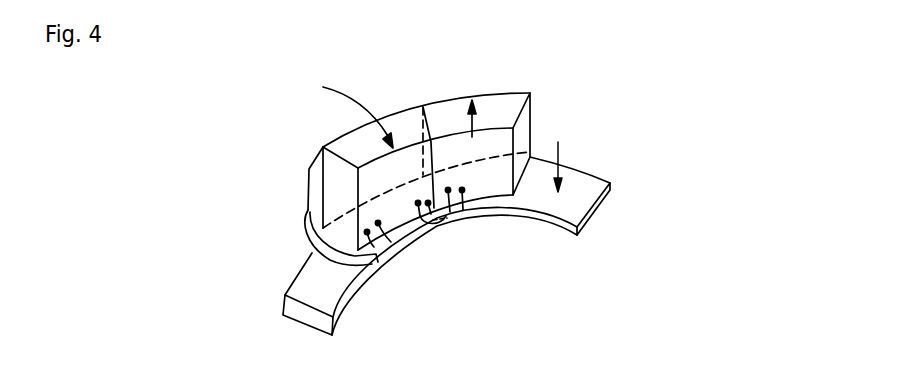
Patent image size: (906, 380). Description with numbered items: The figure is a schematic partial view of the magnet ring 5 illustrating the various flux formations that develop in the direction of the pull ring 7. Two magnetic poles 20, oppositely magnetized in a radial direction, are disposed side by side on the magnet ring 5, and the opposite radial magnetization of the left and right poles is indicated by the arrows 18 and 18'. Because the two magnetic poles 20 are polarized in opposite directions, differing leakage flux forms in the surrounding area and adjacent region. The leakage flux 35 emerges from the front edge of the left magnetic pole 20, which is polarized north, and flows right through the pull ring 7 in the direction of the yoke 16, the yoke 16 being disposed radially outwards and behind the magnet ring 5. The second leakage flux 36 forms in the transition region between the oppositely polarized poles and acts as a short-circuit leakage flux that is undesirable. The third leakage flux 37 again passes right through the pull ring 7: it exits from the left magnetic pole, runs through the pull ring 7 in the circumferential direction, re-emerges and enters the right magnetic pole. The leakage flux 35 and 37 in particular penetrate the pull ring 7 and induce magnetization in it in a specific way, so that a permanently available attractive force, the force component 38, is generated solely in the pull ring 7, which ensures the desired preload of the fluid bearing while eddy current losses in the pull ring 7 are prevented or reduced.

The magnet ring 5 is at (411, 142).
The pull ring 7 is at (587, 197).
The yoke 16 is at (312, 213).
The magnetization direction 18 is at (502, 86).
The opposite magnetization direction 18' is at (338, 102).
The magnetic poles 20 is at (357, 150).
The leakage flux 35 is at (391, 242).
The second leakage flux 36 is at (434, 214).
The third leakage flux 37 is at (455, 203).
The force component 38 is at (560, 150).